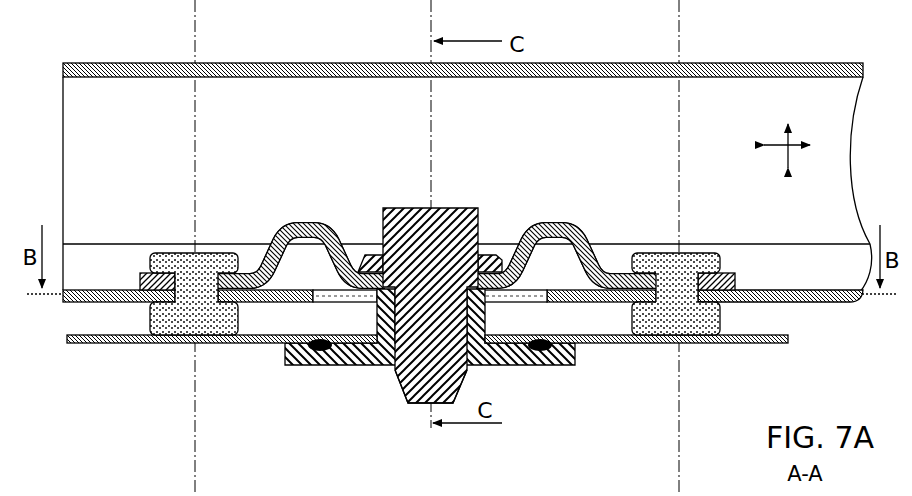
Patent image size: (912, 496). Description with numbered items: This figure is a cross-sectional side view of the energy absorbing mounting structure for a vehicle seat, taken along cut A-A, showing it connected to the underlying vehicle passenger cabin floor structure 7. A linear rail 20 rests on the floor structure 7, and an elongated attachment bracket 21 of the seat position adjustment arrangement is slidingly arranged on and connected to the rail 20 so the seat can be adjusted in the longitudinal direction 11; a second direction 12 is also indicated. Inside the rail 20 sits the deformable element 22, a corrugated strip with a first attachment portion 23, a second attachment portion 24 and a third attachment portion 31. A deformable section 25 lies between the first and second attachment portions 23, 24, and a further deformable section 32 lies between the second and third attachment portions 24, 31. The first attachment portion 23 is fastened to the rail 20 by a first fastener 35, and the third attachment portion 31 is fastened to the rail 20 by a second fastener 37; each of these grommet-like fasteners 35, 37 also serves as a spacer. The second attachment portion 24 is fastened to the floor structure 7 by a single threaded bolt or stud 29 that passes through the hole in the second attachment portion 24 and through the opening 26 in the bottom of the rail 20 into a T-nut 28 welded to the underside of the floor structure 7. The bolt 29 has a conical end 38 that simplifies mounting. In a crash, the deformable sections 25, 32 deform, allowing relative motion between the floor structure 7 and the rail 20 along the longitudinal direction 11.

The vehicle passenger cabin floor structure 7 is at (90, 343).
The longitudinal direction 11 is at (796, 159).
The second direction 12 is at (803, 141).
The rail 20 is at (607, 302).
The attachment bracket 21 is at (741, 66).
The deformable element 22 is at (437, 146).
The first attachment portion 23 is at (143, 302).
The second attachment portion 24 is at (490, 302).
The deformable section 25 is at (292, 222).
The opening 26 is at (335, 303).
The T-nut 28 is at (298, 368).
The threaded bolt or stud 29 is at (418, 208).
The third attachment portion 31 is at (722, 302).
The further deformable section 32 is at (572, 222).
The first fastener 35 is at (178, 253).
The second fastener 37 is at (683, 253).
The conical end 38 is at (397, 382).